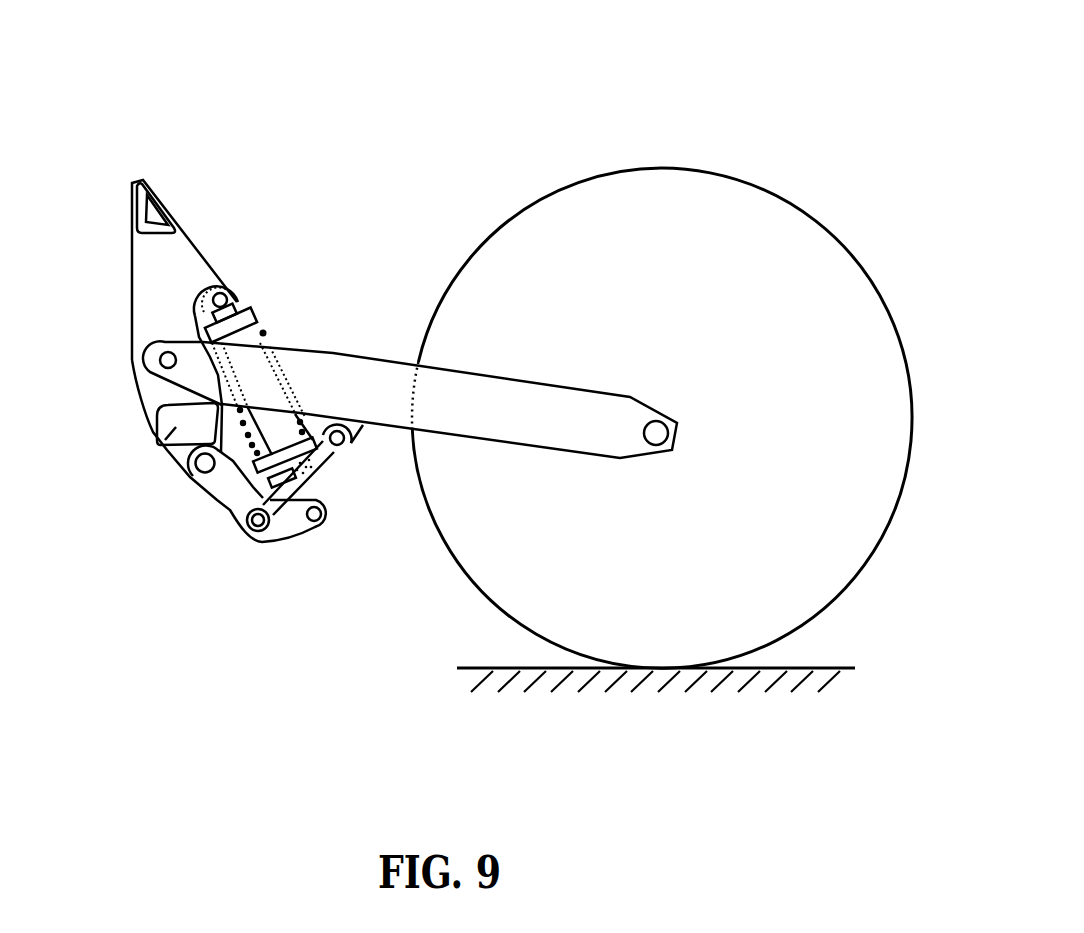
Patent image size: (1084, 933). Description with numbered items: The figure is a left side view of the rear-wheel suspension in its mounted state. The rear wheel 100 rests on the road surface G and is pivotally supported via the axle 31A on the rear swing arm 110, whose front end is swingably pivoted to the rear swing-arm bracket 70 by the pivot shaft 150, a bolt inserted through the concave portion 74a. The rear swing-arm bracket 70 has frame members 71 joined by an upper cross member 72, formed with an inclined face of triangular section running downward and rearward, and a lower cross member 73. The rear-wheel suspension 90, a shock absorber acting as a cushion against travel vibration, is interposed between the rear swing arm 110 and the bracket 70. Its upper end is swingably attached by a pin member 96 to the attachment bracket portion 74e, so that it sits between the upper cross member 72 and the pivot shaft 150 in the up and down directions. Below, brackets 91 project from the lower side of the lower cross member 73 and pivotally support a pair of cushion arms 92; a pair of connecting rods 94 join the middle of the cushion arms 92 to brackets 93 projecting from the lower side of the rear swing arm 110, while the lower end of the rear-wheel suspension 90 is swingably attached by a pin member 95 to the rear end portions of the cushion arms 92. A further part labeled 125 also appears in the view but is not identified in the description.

The rear swing-arm bracket 70 is at (232, 132).
The frame member 71 is at (132, 265).
The upper cross member 72 is at (150, 213).
The lower cross member 73 is at (180, 448).
The concave portion 74a is at (186, 335).
The attachment bracket portion 74e is at (237, 295).
The rear-wheel suspension 90 is at (263, 333).
The bracket 91 is at (190, 480).
The cushion arm 92 is at (232, 495).
The bracket 93 is at (350, 430).
The connecting rod 94 is at (330, 453).
The pin member 95 is at (315, 528).
The pin member 96 is at (222, 300).
The rear wheel 100 is at (671, 168).
The rear swing arm 110 is at (333, 352).
The pivot boss 125 is at (141, 357).
The pivot shaft 150 is at (153, 373).
The axle 31A is at (660, 428).
The road surface G is at (827, 669).